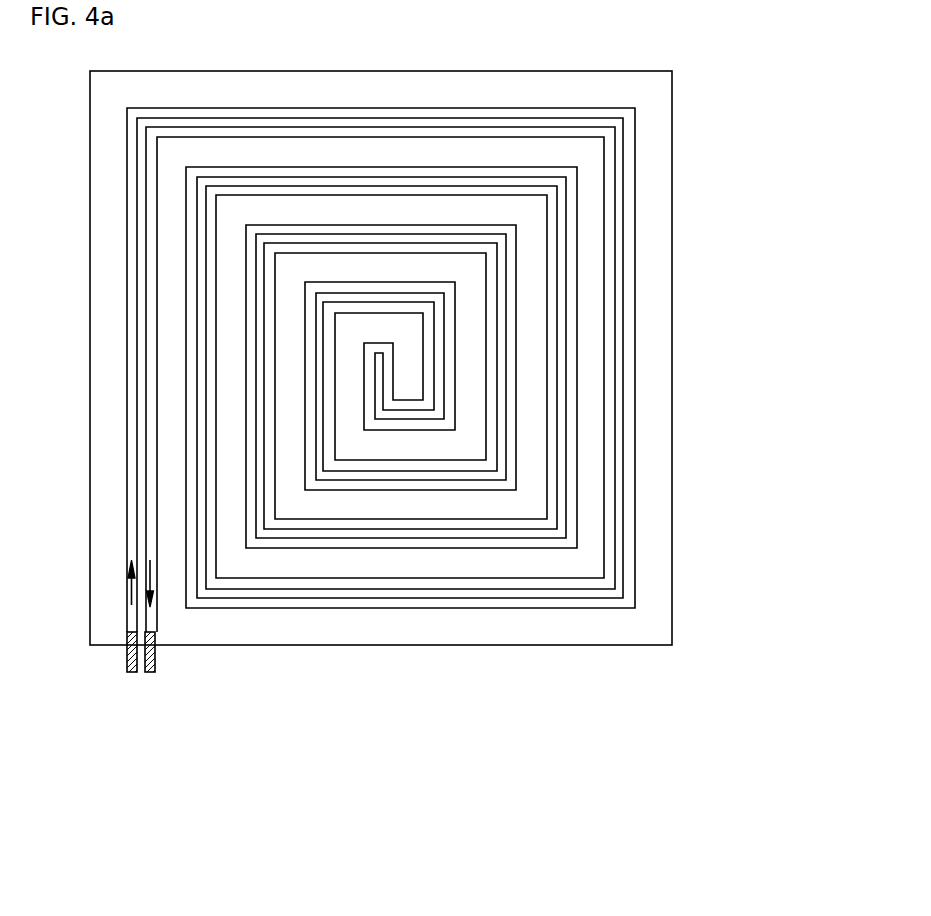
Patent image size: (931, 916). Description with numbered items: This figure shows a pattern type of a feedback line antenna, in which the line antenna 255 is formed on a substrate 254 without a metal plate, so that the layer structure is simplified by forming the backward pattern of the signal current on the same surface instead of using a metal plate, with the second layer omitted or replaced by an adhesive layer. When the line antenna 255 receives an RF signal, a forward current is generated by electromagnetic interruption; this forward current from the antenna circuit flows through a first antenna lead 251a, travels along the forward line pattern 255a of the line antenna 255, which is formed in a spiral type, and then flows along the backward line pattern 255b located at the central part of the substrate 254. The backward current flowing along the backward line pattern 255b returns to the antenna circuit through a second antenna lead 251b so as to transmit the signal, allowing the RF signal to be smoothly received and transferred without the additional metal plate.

The substrate 254 is at (652, 208).
The line antenna 255 is at (484, 370).
The forward line pattern 255a is at (627, 433).
The backward line pattern 255b is at (612, 355).
The first antenna lead 251a is at (127, 672).
The second antenna lead 251b is at (153, 672).